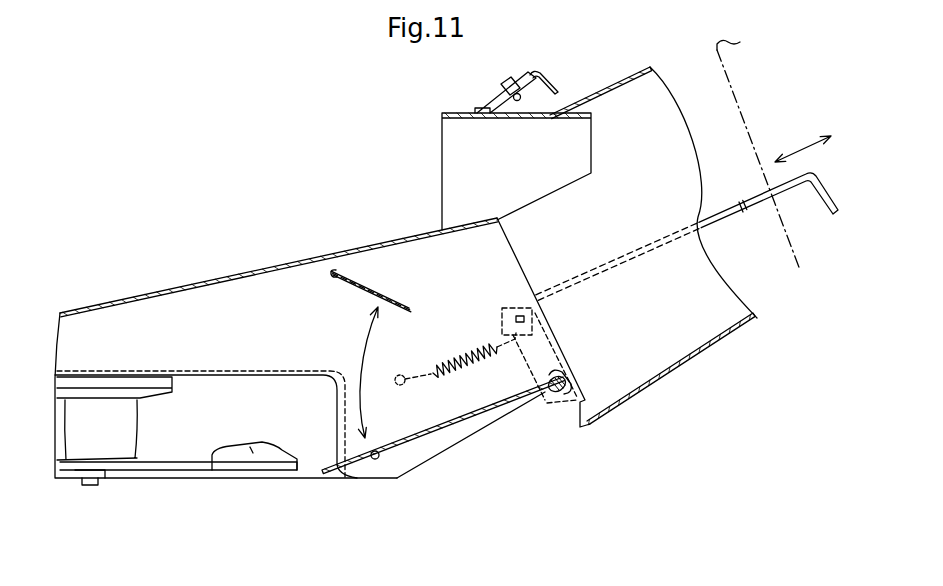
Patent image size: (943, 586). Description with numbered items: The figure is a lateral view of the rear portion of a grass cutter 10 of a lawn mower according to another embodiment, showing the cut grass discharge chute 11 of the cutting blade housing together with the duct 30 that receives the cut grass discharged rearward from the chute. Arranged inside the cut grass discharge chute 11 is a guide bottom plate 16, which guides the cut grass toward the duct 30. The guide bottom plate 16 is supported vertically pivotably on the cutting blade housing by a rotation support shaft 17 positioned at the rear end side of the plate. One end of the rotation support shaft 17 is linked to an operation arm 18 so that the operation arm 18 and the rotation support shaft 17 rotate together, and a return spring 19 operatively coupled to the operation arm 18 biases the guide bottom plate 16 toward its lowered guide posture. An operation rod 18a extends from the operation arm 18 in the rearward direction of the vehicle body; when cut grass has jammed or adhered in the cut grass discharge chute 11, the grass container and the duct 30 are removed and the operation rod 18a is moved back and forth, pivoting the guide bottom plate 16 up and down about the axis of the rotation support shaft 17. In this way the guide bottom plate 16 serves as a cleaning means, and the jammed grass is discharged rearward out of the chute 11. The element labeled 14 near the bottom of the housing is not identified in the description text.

The grass cutter 10 is at (153, 283).
The cut grass discharge chute 11 is at (402, 237).
The latch striker 14 is at (273, 472).
The guide bottom plate 16 is at (347, 287).
The rotation support shaft 17 is at (557, 395).
The operation arm 18 is at (507, 300).
The operation rod 18a is at (730, 220).
The return spring 19 is at (480, 340).
The duct 30 is at (693, 355).